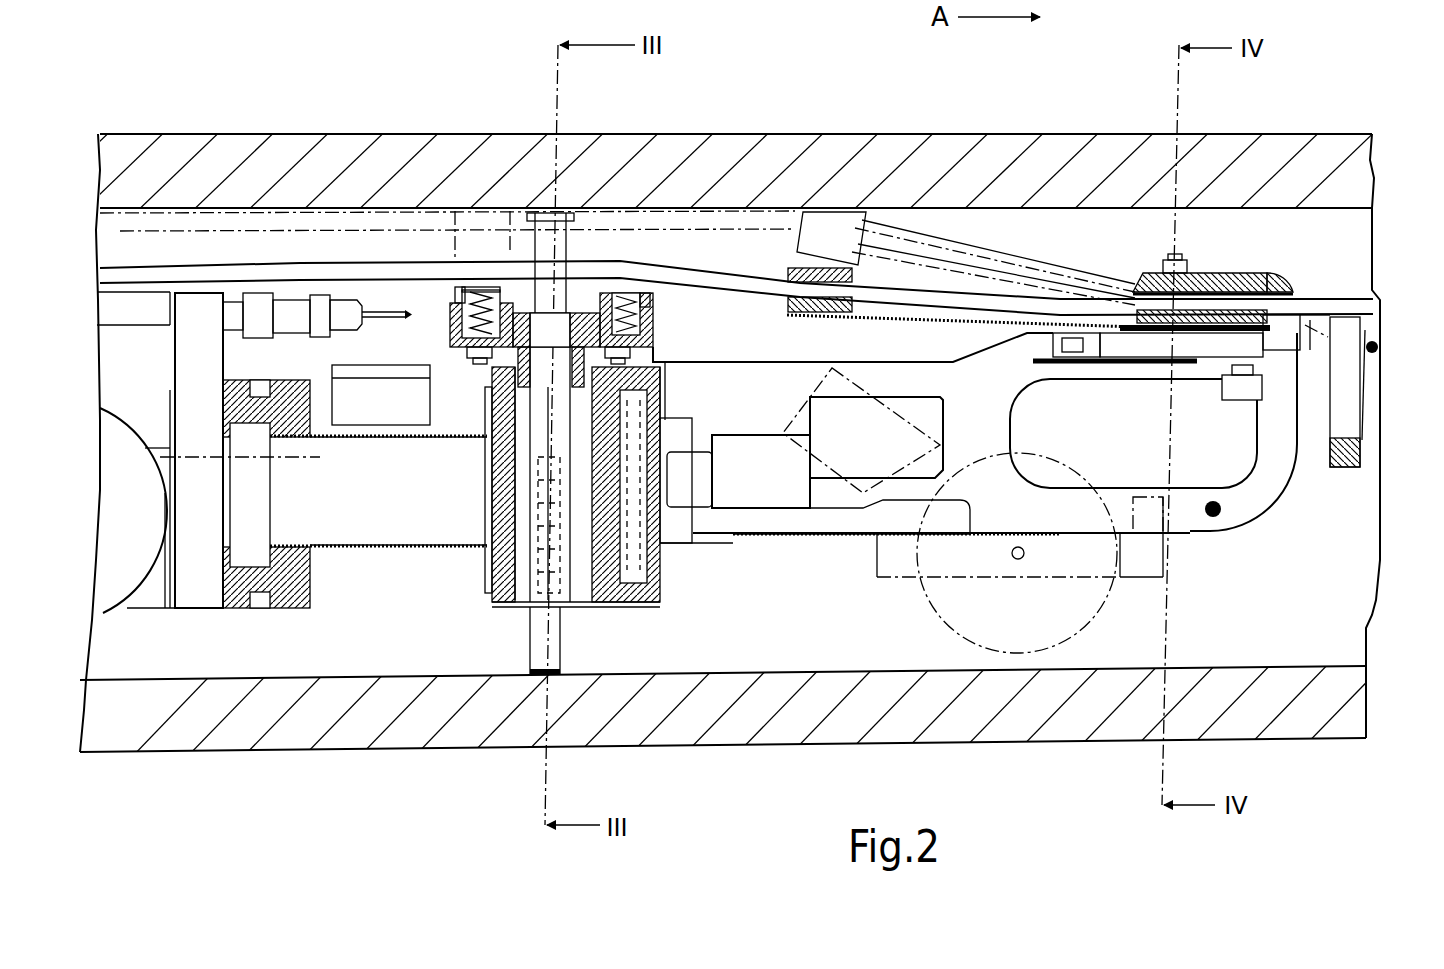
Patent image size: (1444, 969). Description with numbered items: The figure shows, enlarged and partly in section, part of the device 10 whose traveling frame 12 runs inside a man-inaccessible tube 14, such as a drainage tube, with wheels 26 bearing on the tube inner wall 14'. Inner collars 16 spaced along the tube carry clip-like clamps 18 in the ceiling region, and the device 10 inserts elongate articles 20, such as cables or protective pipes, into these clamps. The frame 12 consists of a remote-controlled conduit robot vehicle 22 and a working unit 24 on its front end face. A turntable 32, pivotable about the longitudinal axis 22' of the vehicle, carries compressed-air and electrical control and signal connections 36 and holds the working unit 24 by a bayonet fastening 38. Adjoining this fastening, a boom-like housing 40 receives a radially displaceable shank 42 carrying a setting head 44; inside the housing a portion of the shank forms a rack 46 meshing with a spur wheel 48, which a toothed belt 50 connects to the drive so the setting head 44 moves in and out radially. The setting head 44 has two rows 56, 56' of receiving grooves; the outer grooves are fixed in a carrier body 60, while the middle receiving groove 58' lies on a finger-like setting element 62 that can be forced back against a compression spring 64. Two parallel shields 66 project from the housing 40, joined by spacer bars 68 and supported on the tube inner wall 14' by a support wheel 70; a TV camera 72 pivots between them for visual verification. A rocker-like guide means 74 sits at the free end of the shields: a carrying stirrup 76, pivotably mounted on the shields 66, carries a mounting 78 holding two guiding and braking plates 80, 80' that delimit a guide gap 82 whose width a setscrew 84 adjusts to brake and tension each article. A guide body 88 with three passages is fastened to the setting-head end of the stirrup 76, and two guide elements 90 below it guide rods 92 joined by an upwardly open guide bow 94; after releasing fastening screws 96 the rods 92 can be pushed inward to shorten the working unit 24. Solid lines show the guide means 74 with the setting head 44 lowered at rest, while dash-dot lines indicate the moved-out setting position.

The device 10 is at (705, 632).
The traveling frame 12 is at (163, 610).
The tube 14 is at (693, 369).
The tube inner wall 14' is at (762, 483).
The inner collars 16 is at (548, 666).
The clip-like clamps 18 is at (568, 225).
The elongate articles 20 is at (323, 268).
The conduit robot vehicle 22 is at (141, 180).
The longitudinal axis 22' is at (323, 491).
The working unit 24 is at (760, 540).
The wheels 26 is at (108, 612).
The turntable 32 is at (198, 610).
The compressed-air and electrical control and signal connections 36 is at (283, 302).
The bayonet fastening 38 is at (258, 610).
The housing 40 is at (483, 610).
The shank 42 is at (608, 610).
The setting head 44 is at (445, 331).
The rack 46 is at (559, 712).
The spur wheel 48 is at (530, 453).
The toothed belt 50 is at (620, 612).
The row of receiving grooves 56 is at (481, 207).
The row of receiving grooves 56' is at (680, 220).
The middle receiving groove 58' is at (560, 194).
The carrier body 60 is at (655, 348).
The setting element 62 is at (445, 292).
The compression spring 64 is at (468, 358).
The shields 66 is at (1190, 520).
The spacer bars 68 is at (803, 540).
The support wheel 70 is at (995, 660).
The TV camera 72 is at (830, 478).
The guide means 74 is at (1248, 271).
The carrying stirrup 76 is at (897, 320).
The mounting 78 is at (1206, 273).
The guiding and braking plate 80 is at (1392, 310).
The guiding and braking plate 80' is at (1298, 245).
The guide gap 82 is at (1295, 292).
The setscrew 84 is at (1168, 260).
The guide body 88 is at (830, 214).
The guide elements 90 is at (1143, 343).
The rods 92 is at (1258, 408).
The guide bow 94 is at (1341, 467).
The fastening screws 96 is at (1232, 392).